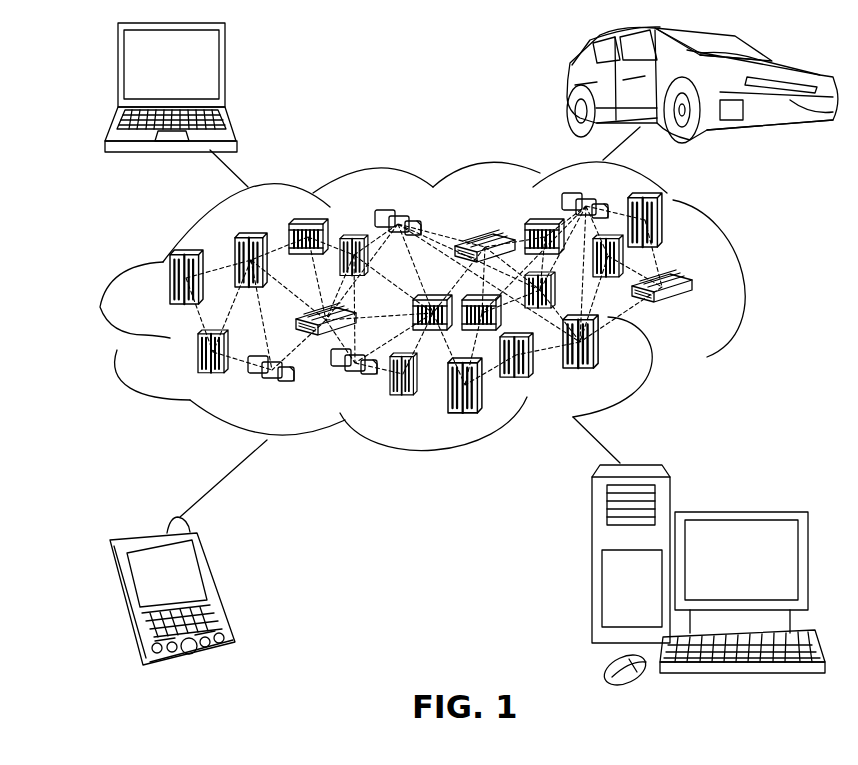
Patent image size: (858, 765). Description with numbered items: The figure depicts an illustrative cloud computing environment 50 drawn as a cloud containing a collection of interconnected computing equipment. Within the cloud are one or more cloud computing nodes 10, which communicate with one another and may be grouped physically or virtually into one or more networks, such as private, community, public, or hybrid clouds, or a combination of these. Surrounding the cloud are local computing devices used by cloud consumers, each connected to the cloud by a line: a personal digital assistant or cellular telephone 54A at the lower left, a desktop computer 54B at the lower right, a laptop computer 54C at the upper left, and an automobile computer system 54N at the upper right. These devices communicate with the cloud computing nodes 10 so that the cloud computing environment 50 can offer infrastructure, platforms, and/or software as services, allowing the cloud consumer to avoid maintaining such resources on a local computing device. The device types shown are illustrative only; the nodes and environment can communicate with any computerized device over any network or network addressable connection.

The cloud computing nodes 10 is at (693, 307).
The cloud computing environment 50 is at (745, 282).
The personal digital assistant (PDA) or cellular telephone 54A is at (217, 585).
The desktop computer 54B is at (740, 508).
The laptop computer 54C is at (227, 72).
The automobile computer system 54N is at (567, 87).